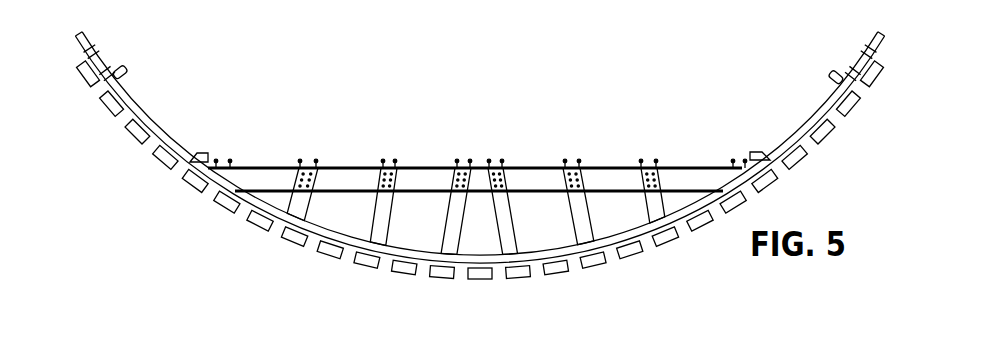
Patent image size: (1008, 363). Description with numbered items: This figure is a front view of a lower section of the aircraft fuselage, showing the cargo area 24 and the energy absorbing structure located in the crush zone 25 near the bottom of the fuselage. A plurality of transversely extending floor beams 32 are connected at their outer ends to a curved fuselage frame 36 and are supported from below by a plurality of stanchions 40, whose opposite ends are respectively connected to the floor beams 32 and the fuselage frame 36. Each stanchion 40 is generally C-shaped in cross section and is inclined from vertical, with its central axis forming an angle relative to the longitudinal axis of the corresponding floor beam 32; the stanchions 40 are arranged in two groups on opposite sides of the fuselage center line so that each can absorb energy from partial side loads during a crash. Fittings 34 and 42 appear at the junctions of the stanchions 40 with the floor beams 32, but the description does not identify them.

The cargo area 24 is at (476, 80).
The crush zone 25 is at (558, 236).
The floor beams 32 is at (424, 177).
The fastener clips 34 is at (657, 164).
The fuselage frame 36 is at (125, 103).
The stanchions 40 is at (300, 199).
The mounting pads 42 is at (314, 163).